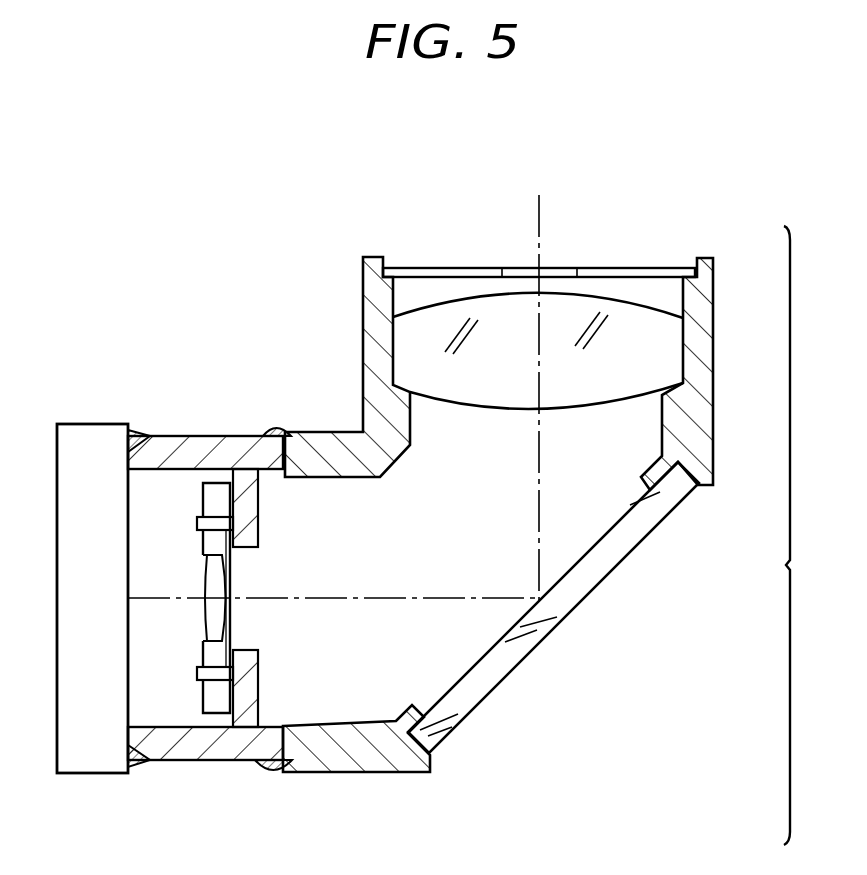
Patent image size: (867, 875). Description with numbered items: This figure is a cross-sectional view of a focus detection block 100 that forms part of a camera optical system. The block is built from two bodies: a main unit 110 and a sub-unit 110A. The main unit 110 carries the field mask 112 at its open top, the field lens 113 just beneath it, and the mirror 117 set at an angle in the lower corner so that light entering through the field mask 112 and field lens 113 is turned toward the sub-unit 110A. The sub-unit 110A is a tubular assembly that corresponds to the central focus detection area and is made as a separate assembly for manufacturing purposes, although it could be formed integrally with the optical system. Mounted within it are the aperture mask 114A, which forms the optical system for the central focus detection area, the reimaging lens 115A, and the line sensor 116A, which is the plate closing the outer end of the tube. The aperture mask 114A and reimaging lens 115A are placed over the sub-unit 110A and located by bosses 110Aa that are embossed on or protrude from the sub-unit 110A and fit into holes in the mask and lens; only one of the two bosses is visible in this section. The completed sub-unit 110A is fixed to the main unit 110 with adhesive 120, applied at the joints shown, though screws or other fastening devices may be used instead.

The focus detection block 100 is at (811, 535).
The main unit 110 is at (360, 392).
The sub-unit 110A is at (205, 452).
The boss 110Aa is at (196, 682).
The field mask 112 is at (630, 268).
The field lens 113 is at (668, 345).
The aperture mask 114A is at (233, 632).
The reimaging lens 115A is at (210, 610).
The line sensor 116A is at (75, 750).
The mirror 117 is at (573, 587).
The adhesive 120 is at (137, 768).